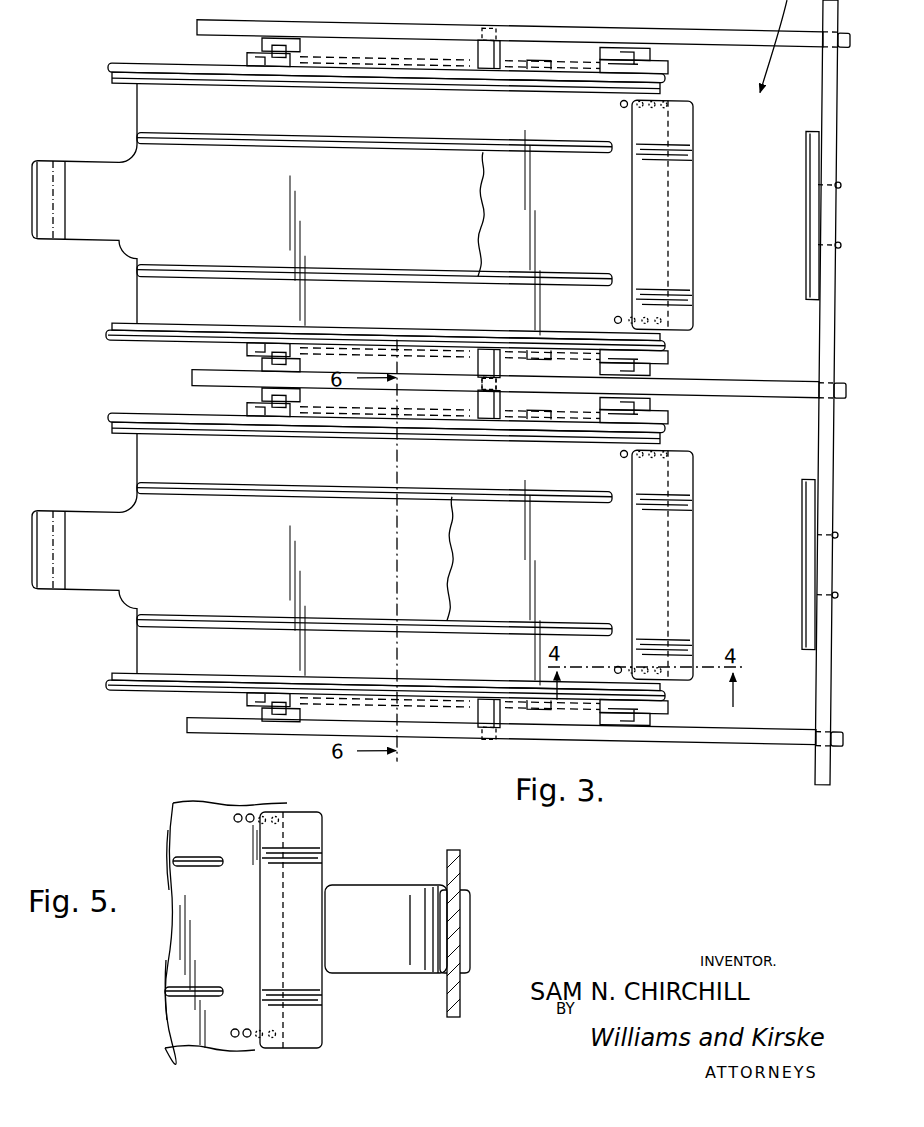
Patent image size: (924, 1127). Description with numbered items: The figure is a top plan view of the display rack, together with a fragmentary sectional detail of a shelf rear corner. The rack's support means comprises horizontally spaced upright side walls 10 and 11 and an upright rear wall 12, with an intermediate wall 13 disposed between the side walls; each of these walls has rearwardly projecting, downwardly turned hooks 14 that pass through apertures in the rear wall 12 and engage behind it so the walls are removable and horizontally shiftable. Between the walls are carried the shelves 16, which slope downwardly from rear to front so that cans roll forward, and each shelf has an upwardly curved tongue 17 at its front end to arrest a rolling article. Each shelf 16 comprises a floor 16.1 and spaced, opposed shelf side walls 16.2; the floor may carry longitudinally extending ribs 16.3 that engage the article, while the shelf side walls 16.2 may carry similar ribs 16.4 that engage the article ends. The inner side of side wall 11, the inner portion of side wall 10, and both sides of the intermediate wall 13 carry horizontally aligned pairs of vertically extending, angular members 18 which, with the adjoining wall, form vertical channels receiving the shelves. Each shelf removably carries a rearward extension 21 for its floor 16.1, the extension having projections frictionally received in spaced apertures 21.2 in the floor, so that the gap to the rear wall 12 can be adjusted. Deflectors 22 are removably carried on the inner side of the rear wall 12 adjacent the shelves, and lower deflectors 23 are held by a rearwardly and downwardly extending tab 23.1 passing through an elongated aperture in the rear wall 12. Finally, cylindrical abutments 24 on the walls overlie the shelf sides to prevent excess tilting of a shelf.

In FIG. 3, the side wall 10 is at (720, 724).
In FIG. 3, the side wall 11 is at (715, 19).
In FIG. 3, the rear wall 12 is at (822, 312).
In FIG. 5, the rear wall 12 is at (457, 868).
In FIG. 3, the intermediate wall 13 is at (771, 377).
In FIG. 3, the hook 14 is at (838, 367).
In FIG. 3, the shelf 16 is at (410, 218).
In FIG. 5, the shelf 16 is at (173, 823).
In FIG. 3, the floor 16.1 is at (148, 299).
In FIG. 5, the floor 16.1 is at (167, 966).
In FIG. 3, the shelf side wall 16.2 is at (208, 73).
In FIG. 3, the rib 16.3 is at (508, 216).
In FIG. 3, the rib 16.4 is at (330, 82).
In FIG. 3, the tongue 17 is at (78, 224).
In FIG. 3, the member 18 is at (258, 38).
In FIG. 3, the rearward extension 21 is at (681, 159).
In FIG. 5, the rearward extension 21 is at (312, 830).
In FIG. 3, the aperture 21.2 is at (620, 93).
In FIG. 5, the aperture 21.2 is at (250, 814).
In FIG. 3, the deflector 22 is at (808, 199).
In FIG. 5, the lower deflector 23 is at (355, 977).
In FIG. 5, the tab 23.1 is at (472, 927).
In FIG. 3, the abutment 24 is at (505, 40).